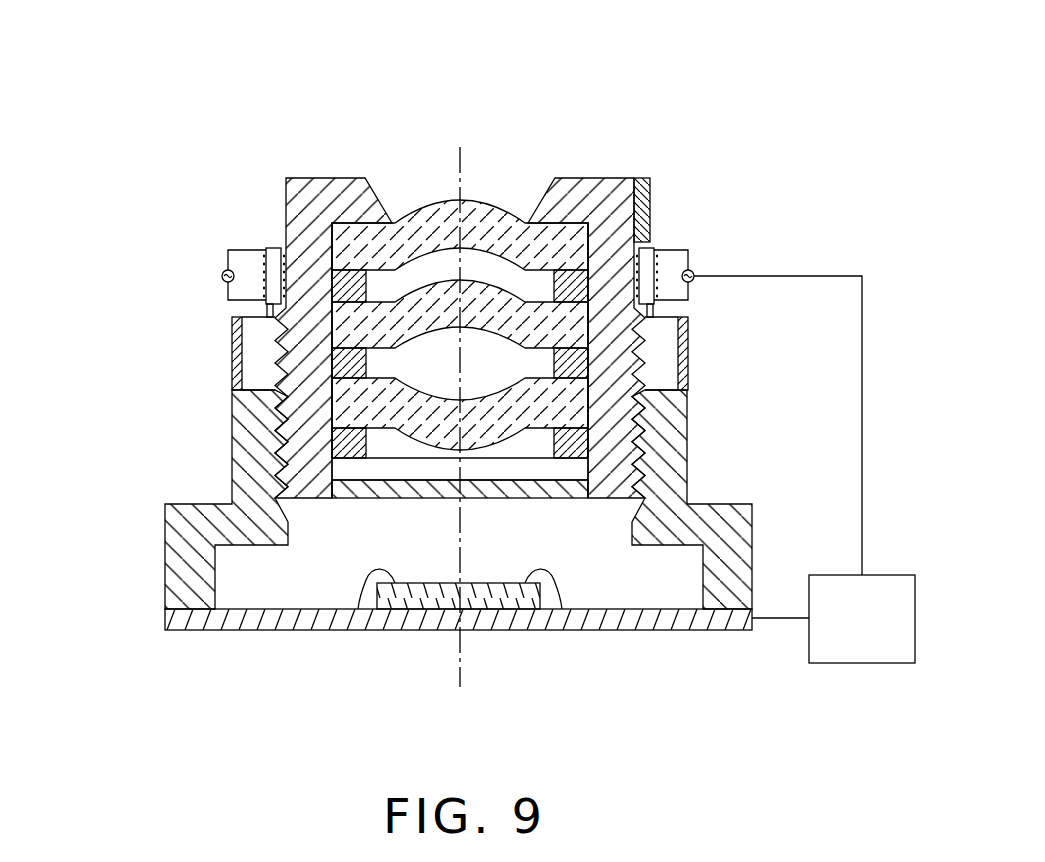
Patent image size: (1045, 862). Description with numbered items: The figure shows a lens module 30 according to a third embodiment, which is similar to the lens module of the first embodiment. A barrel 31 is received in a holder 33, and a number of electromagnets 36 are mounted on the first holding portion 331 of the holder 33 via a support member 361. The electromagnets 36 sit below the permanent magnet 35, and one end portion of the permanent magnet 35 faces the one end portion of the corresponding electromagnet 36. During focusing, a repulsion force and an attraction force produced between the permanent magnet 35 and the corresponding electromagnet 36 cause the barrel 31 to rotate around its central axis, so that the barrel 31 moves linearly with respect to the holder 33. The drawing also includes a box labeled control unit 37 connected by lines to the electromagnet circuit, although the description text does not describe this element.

The lens module 30 is at (444, 44).
The barrel 31 is at (298, 170).
The holder 33 is at (150, 497).
The first holding portion 331 is at (243, 443).
The permanent magnet 35 is at (646, 178).
The electromagnet 36 is at (652, 248).
The support member 361 is at (688, 346).
The control unit 37 is at (862, 663).